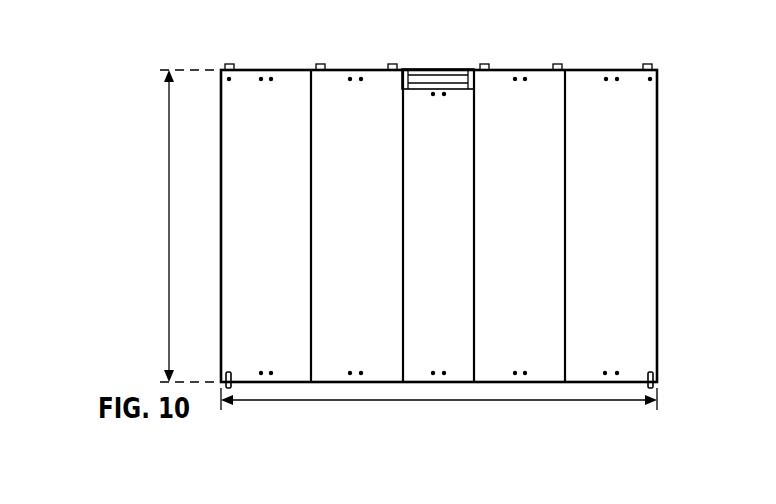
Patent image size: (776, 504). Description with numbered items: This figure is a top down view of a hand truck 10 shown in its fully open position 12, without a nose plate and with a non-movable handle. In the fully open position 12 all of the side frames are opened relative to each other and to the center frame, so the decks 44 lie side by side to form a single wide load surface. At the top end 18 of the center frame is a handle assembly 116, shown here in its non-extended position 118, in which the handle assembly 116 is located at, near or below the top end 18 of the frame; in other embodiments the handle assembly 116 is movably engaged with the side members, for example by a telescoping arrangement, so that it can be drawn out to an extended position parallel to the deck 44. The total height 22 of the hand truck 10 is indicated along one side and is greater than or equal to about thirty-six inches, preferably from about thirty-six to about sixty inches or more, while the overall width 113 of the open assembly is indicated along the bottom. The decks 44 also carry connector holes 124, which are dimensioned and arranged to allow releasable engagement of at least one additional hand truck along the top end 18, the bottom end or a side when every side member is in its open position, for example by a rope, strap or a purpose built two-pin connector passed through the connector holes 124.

The hand truck 10 is at (483, 202).
The fully open position 12 is at (677, 121).
The top end 18 is at (359, 69).
The total height 22 is at (169, 226).
The deck 44 is at (632, 261).
The width 113 is at (438, 401).
The handle assembly 116 is at (438, 68).
The non-extended position 118 is at (465, 90).
The connector holes 124 is at (606, 80).